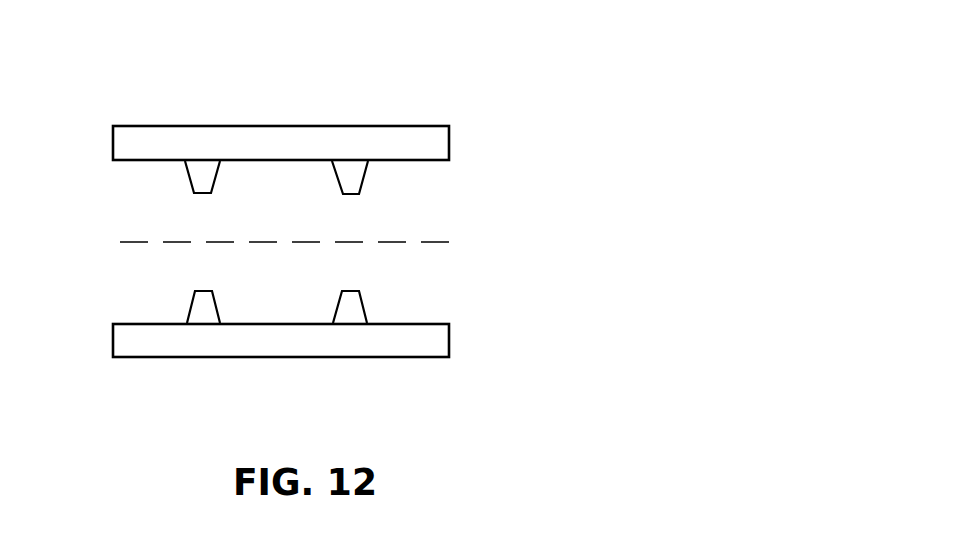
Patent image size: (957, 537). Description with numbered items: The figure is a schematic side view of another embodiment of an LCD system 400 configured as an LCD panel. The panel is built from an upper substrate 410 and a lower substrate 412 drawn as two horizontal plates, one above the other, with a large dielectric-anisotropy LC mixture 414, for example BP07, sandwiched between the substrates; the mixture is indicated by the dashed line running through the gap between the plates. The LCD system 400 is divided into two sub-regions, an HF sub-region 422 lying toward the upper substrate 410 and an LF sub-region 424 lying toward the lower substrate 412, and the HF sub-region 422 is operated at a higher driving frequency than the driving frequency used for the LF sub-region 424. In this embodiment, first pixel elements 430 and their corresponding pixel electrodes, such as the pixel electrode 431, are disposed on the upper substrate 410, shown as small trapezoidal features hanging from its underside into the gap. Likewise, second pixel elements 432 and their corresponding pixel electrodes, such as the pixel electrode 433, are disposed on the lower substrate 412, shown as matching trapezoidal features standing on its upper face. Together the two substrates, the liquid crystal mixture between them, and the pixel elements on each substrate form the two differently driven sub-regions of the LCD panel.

The LCD system 400 is at (525, 95).
The upper substrate 410 is at (112, 144).
The lower substrate 412 is at (112, 338).
The large Δε LC mixture 414 is at (463, 226).
The HF sub-region 422 is at (450, 205).
The LF sub-region 424 is at (442, 267).
The first pixel elements 430 is at (137, 177).
The pixel electrode 431 is at (342, 196).
The second pixel elements 432 is at (172, 308).
The pixel electrode 433 is at (342, 291).